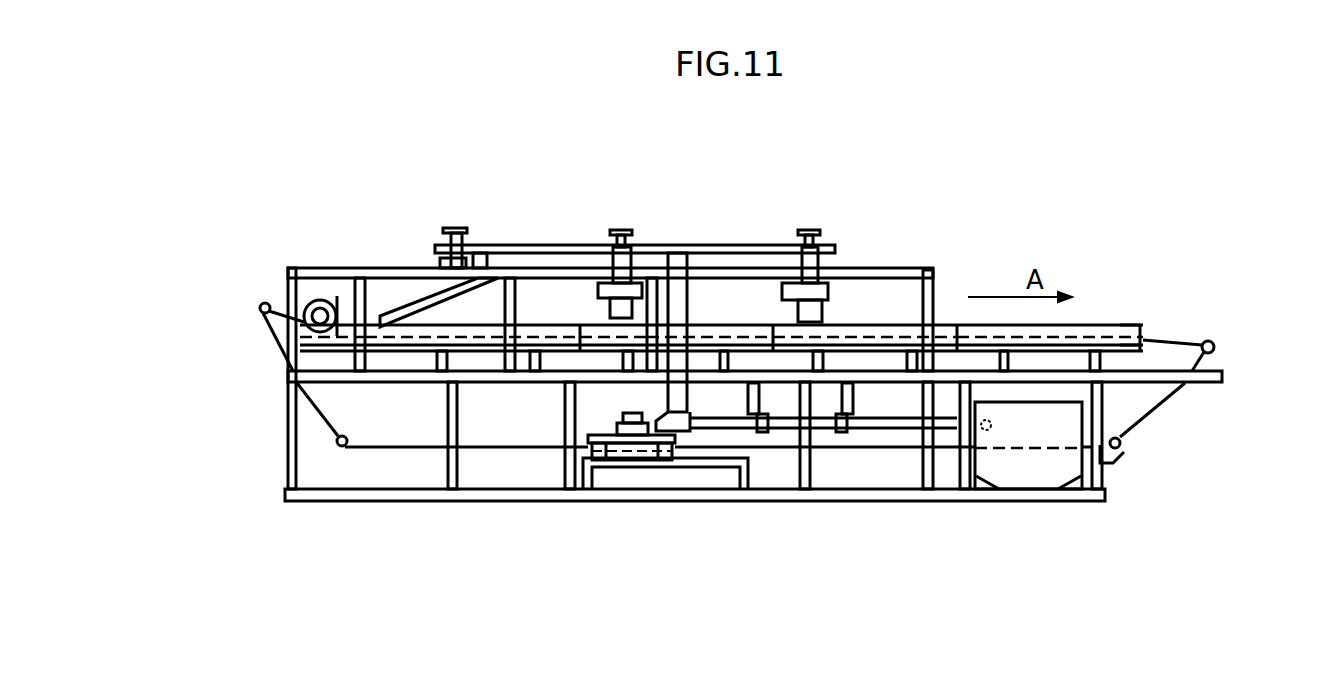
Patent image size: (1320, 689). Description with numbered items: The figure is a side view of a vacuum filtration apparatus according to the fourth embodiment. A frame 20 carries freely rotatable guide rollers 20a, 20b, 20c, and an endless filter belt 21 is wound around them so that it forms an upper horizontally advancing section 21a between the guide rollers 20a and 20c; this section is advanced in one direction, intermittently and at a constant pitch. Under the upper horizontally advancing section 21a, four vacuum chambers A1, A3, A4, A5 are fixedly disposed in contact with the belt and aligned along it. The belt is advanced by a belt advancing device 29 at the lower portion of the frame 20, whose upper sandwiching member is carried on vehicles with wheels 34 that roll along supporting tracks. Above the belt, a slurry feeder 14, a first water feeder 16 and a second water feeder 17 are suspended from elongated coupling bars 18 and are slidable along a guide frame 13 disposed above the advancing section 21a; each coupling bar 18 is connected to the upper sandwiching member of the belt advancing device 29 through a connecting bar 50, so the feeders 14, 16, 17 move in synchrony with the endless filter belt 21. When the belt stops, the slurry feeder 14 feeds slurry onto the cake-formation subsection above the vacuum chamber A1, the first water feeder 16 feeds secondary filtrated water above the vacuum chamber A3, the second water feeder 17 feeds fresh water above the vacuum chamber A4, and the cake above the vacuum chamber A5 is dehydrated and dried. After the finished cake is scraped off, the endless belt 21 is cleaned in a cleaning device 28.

The guide frame 13 is at (849, 268).
The slurry feeder 14 is at (412, 300).
The first water feeder 16 is at (607, 281).
The second water feeder 17 is at (790, 281).
The coupling bar 18 is at (729, 246).
The frame 20 is at (516, 492).
The guide roller 20a is at (1207, 340).
The guide roller 20b is at (262, 304).
The guide roller 20c is at (303, 312).
The endless filter belt 21 is at (1160, 339).
The upper horizontally advancing section 21a is at (1148, 337).
The cleaning device 28 is at (1029, 470).
The belt advancing device 29 is at (710, 480).
The wheel 34 is at (346, 330).
The connecting bar 50 is at (685, 402).
The vacuum chamber A1 is at (533, 337).
The vacuum chamber A3 is at (705, 330).
The vacuum chamber A4 is at (873, 332).
The vacuum chamber A5 is at (1010, 342).